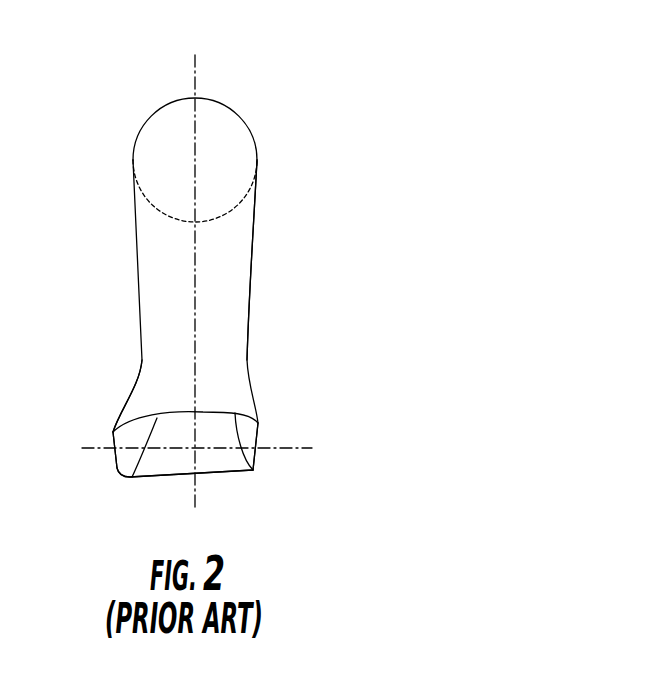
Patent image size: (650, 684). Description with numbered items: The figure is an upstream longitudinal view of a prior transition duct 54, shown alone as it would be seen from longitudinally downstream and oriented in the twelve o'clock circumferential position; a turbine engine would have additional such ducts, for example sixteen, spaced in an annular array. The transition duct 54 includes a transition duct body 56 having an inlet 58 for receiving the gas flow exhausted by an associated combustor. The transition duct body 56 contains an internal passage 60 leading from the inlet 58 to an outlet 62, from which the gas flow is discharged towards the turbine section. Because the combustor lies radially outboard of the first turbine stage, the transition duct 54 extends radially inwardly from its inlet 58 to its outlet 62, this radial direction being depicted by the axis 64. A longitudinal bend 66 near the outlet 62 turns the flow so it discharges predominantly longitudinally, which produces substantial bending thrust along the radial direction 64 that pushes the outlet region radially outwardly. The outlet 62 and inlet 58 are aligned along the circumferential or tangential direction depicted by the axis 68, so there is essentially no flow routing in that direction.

The transition duct 54 is at (296, 222).
The transition duct body 56 is at (250, 316).
The inlet 58 is at (214, 138).
The internal passage 60 is at (192, 437).
The outlet 62 is at (207, 473).
The axis 64 is at (191, 265).
The longitudinal bend 66 is at (129, 362).
The axis 68 is at (212, 448).